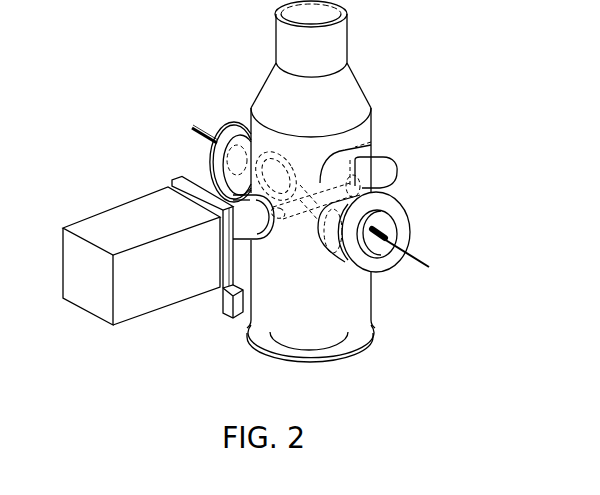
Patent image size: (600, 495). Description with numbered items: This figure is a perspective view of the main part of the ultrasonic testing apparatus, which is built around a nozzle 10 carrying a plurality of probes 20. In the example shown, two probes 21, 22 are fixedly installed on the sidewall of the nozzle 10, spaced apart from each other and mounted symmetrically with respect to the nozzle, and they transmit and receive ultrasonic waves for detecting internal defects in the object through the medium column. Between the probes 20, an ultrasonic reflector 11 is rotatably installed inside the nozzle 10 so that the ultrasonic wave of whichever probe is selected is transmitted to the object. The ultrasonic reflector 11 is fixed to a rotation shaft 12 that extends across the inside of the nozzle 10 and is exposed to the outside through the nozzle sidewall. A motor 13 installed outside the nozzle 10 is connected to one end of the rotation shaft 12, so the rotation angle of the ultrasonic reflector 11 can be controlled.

The nozzle 10 is at (362, 301).
The ultrasonic reflector 11 is at (371, 142).
The rotation shaft 12 is at (373, 151).
The motor 13 is at (148, 292).
The plurality of probes 20 is at (186, 88).
The probe 21 is at (383, 226).
The probe 22 is at (222, 125).